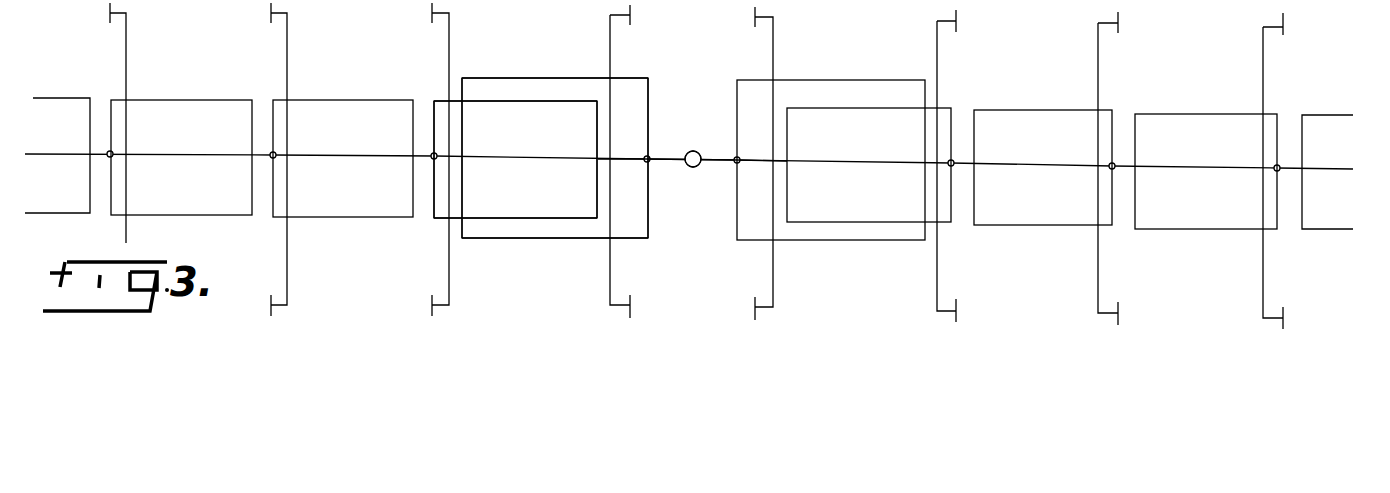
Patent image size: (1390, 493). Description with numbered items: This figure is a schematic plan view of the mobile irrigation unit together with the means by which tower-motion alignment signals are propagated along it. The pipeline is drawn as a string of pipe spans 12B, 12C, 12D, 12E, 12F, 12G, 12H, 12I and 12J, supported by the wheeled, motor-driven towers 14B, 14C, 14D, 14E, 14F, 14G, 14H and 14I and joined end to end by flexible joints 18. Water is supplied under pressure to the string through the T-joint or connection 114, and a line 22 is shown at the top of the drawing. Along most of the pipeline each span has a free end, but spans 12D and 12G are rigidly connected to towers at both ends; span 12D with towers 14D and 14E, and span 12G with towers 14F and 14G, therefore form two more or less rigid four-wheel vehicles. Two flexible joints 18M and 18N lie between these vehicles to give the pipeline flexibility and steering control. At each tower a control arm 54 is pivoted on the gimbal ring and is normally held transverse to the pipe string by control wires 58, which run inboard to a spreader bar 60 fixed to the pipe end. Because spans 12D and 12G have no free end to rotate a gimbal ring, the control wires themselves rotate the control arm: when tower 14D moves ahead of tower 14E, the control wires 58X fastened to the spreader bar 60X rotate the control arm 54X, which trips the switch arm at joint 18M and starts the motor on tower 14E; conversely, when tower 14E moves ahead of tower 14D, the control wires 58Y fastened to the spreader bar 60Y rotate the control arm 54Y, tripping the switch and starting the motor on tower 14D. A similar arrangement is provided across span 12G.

The pipe span 12B is at (200, 136).
The pipe span 12C is at (362, 136).
The pipe span 12D is at (550, 138).
The pipe span 12E is at (668, 164).
The pipe span 12F is at (728, 138).
The pipe span 12G is at (890, 143).
The pipe span 12H is at (1058, 146).
The pipe span 12I is at (1200, 146).
The pipe span 12J is at (1350, 150).
The wheeled tower 14B is at (126, 54).
The wheeled tower 14C is at (288, 266).
The wheeled tower 14D is at (450, 275).
The wheeled tower 14E is at (612, 271).
The wheeled tower 14F is at (775, 276).
The wheeled tower 14G is at (940, 276).
The wheeled tower 14H is at (1100, 274).
The wheeled tower 14I is at (1265, 276).
The joint 18 is at (107, 156).
The flexible joint 18M is at (648, 157).
The flexible joint 18N is at (737, 161).
The line 22 is at (689, 84).
The control arm 54 is at (110, 110).
The control arm 54X is at (637, 75).
The control arm 54Y is at (434, 112).
The control wires 58 is at (203, 82).
The control wires 58X is at (512, 78).
The control wires 58Y is at (487, 216).
The spreader bar 60 is at (250, 178).
The spreader bar 60X is at (465, 96).
The spreader bar 60Y is at (596, 203).
The T-joint 114 is at (690, 151).